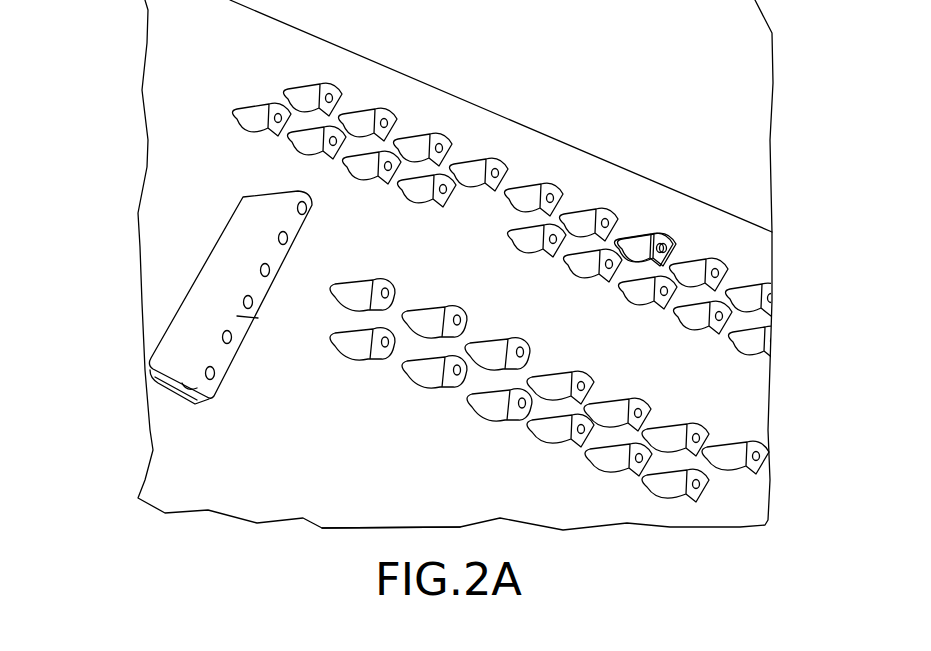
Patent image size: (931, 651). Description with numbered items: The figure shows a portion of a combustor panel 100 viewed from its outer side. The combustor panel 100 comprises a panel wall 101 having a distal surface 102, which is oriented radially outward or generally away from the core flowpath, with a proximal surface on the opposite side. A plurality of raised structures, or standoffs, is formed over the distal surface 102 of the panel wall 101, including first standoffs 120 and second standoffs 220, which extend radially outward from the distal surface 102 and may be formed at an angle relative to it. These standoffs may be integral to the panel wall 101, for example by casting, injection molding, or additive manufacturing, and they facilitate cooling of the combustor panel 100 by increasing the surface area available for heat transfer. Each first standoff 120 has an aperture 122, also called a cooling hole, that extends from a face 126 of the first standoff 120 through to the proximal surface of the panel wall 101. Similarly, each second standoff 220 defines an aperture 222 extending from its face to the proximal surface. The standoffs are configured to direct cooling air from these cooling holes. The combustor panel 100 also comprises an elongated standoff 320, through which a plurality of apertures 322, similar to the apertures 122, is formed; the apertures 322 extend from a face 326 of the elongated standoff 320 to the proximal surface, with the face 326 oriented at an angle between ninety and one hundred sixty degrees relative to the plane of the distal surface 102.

The combustor panel 100 is at (113, 68).
The panel wall 101 is at (608, 172).
The distal surface 102 is at (357, 510).
The first standoffs 120 is at (369, 102).
The aperture 122 is at (288, 108).
The face 126 is at (497, 165).
The second standoffs 220 is at (505, 330).
The aperture 222 is at (415, 293).
The elongated standoff 320 is at (247, 306).
The apertures 322 is at (282, 281).
The face 326 is at (258, 318).